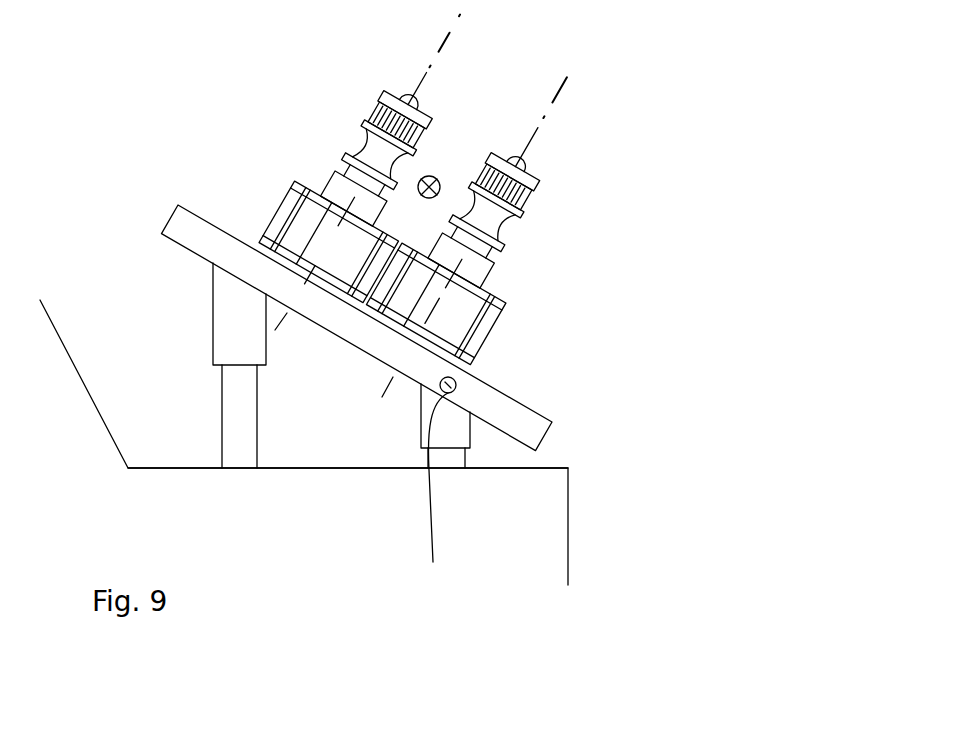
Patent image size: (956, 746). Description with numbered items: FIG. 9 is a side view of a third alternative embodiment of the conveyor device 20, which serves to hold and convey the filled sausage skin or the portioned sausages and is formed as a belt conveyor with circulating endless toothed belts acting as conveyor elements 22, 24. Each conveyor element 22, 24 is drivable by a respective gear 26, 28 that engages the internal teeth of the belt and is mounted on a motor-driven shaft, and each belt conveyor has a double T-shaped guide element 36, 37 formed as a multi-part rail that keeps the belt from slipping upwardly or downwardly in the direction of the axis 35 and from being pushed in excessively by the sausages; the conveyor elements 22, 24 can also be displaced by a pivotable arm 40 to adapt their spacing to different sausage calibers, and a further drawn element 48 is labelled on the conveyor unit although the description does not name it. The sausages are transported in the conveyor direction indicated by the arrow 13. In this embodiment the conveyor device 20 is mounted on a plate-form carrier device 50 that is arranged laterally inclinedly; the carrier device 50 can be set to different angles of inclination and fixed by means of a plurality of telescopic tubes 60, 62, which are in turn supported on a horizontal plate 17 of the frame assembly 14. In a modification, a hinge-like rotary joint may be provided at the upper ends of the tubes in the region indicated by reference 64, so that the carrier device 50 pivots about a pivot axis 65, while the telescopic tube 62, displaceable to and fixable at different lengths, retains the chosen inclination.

The arrow 13 is at (437, 178).
The frame assembly 14 is at (570, 545).
The horizontal plate 17 is at (334, 470).
The conveyor device 20 is at (652, 212).
The conveyor element 22 is at (364, 150).
The conveyor element 24 is at (502, 228).
The gear 26 is at (380, 110).
The gear 28 is at (524, 191).
The axis 35 is at (460, 44).
The guide element 36 is at (334, 180).
The guide element 37 is at (480, 270).
The pivotable arm 40 is at (490, 325).
The first drive housing 48 is at (283, 207).
The carrier device 50 is at (525, 413).
The telescopic tube 60 is at (420, 430).
The telescopic tube 62 is at (213, 343).
The rotary joint region 64 is at (455, 379).
The pivot axis 65 is at (426, 502).